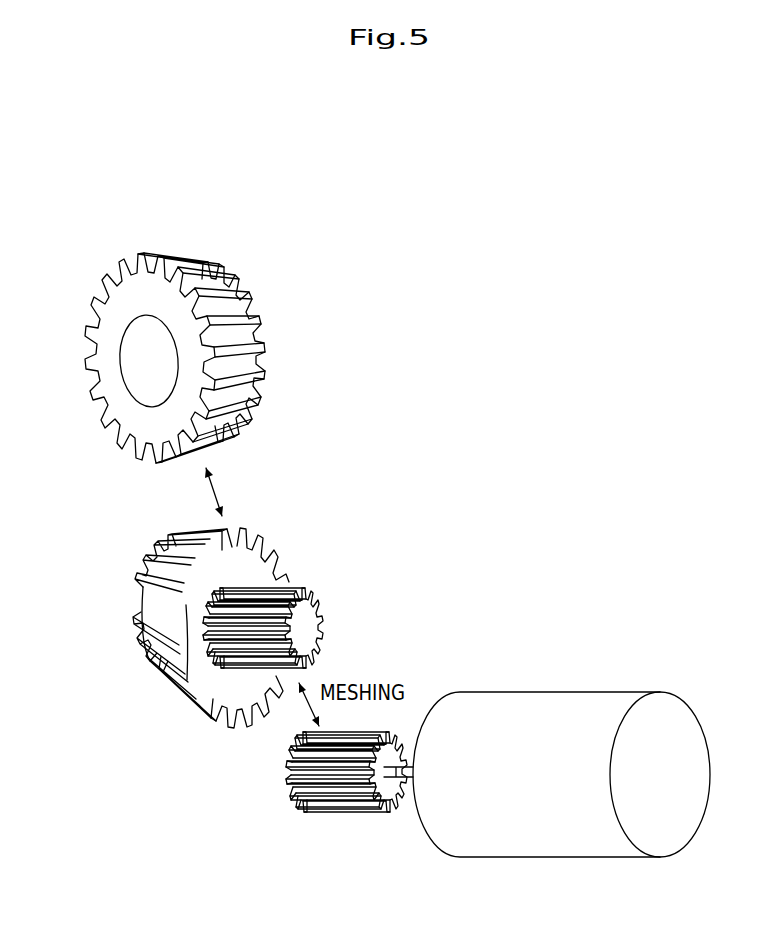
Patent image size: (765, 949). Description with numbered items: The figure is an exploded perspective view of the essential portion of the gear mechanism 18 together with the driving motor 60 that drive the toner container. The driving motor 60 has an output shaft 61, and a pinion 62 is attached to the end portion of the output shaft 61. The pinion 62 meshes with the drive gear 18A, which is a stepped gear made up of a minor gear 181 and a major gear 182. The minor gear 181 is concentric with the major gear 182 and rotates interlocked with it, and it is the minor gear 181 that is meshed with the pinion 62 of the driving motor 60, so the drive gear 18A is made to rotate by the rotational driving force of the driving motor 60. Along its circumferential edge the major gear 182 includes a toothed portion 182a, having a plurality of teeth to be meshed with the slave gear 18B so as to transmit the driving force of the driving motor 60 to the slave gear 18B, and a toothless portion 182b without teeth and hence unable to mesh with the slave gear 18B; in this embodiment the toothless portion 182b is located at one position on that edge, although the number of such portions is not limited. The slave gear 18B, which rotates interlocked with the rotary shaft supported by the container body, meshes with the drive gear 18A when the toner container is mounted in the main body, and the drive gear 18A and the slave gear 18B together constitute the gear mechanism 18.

The gear mechanism 18 is at (382, 348).
The drive gear 18A is at (300, 556).
The slave gear 18B is at (252, 265).
The minor gear 181 is at (320, 623).
The major gear 182 is at (226, 690).
The toothed portion 182a is at (158, 546).
The toothless portion 182b is at (152, 620).
The driving motor 60 is at (533, 690).
The output shaft 61 is at (406, 786).
The pinion 62 is at (330, 813).